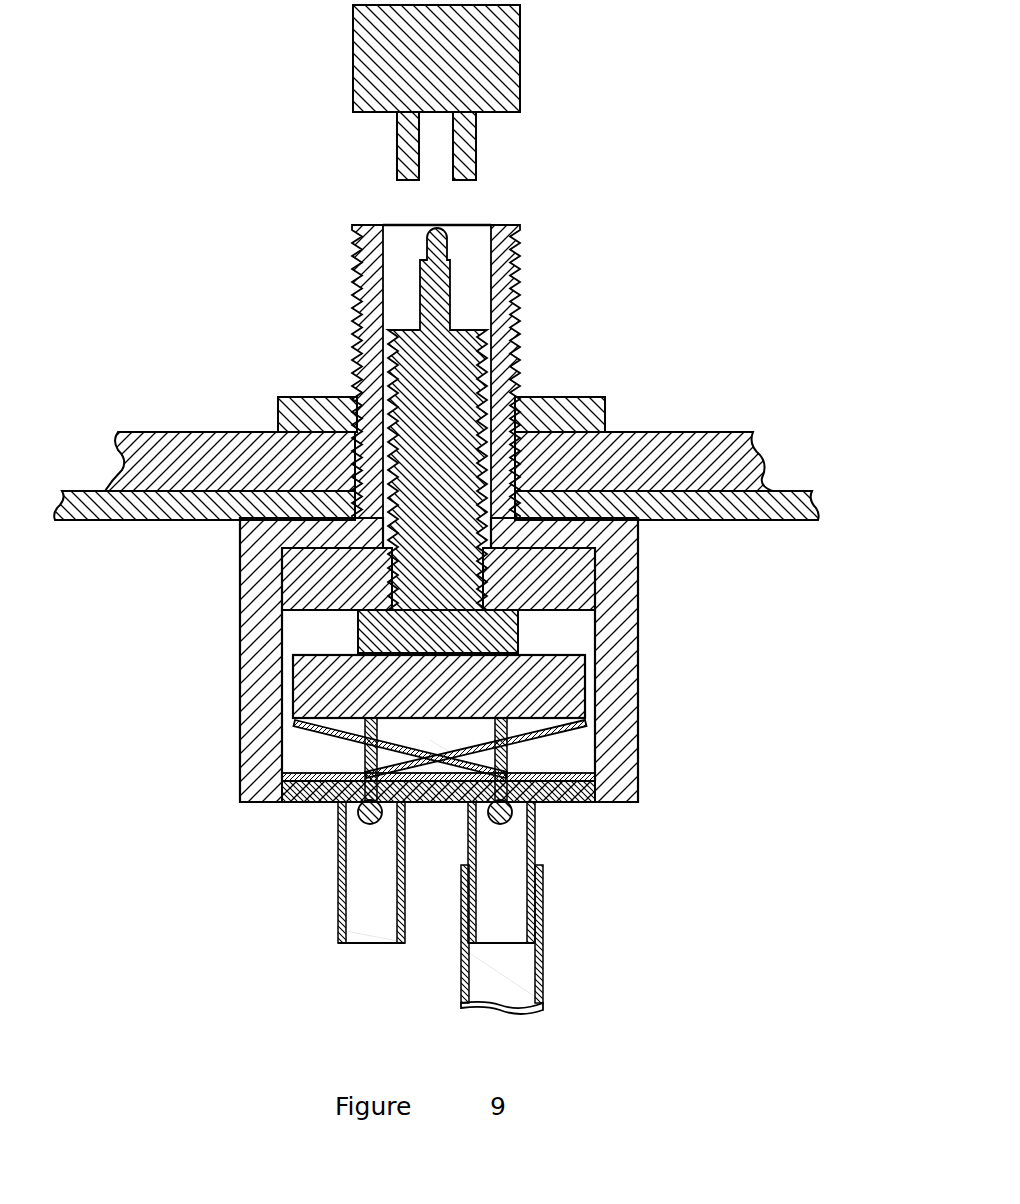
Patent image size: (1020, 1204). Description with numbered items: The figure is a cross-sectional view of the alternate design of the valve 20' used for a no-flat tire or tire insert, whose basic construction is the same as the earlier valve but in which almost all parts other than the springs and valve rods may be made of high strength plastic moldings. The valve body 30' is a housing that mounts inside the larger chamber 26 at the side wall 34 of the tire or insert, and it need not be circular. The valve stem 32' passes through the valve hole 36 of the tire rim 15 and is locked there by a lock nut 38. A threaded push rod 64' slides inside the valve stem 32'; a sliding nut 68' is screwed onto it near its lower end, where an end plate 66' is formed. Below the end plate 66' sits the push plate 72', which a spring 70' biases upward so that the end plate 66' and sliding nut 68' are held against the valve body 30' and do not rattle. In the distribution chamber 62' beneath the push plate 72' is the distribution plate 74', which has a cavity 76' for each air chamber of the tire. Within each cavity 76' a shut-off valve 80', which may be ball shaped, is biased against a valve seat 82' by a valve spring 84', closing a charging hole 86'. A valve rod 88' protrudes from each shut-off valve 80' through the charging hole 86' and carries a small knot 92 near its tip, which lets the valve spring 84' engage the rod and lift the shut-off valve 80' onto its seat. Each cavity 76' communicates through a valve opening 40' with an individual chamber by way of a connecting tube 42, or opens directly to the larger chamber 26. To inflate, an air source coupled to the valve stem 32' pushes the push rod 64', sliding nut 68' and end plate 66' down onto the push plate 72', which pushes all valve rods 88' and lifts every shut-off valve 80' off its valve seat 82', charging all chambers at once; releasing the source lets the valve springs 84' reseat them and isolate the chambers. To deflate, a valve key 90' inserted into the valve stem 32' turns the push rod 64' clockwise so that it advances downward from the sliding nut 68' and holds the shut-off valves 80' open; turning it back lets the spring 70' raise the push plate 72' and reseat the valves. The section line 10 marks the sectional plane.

The valve key 90' is at (483, 90).
The valve stem 32' is at (489, 358).
The push rod 64' is at (495, 419).
The valve 20' is at (729, 191).
The lock nut 38 is at (605, 397).
The valve hole 36 is at (527, 478).
The tire rim 15 is at (750, 470).
The side wall 34 is at (340, 495).
The valve body 30' is at (497, 660).
The sliding nut 68' is at (350, 579).
The end plate 66' is at (311, 631).
The push plate 72' is at (340, 686).
The shut-off valve 80' is at (379, 808).
The spring 70' is at (313, 741).
The valve rod 88' is at (378, 749).
The valve spring 84' is at (589, 743).
The small knot 92 is at (520, 740).
The distribution chamber 62' is at (545, 727).
The distribution plate 74' is at (488, 826).
The charging hole 86' is at (365, 831).
The cavity 76' is at (336, 873).
The valve opening 40' is at (339, 969).
The valve seat 82' is at (543, 872).
The connecting tube 42 is at (543, 952).
The larger chamber 26 is at (445, 1009).
The section line 10 is at (215, 785).